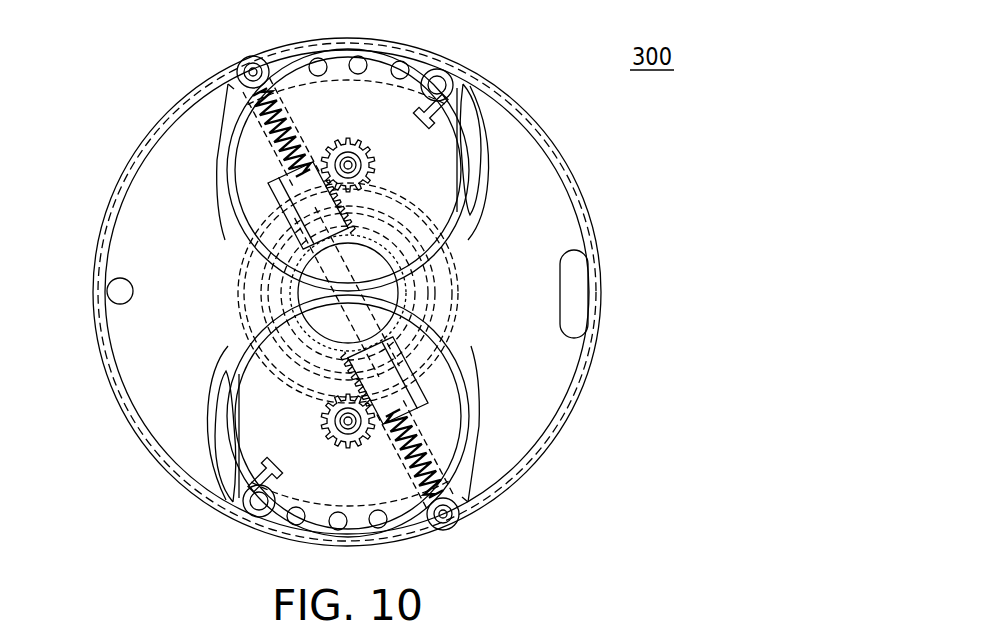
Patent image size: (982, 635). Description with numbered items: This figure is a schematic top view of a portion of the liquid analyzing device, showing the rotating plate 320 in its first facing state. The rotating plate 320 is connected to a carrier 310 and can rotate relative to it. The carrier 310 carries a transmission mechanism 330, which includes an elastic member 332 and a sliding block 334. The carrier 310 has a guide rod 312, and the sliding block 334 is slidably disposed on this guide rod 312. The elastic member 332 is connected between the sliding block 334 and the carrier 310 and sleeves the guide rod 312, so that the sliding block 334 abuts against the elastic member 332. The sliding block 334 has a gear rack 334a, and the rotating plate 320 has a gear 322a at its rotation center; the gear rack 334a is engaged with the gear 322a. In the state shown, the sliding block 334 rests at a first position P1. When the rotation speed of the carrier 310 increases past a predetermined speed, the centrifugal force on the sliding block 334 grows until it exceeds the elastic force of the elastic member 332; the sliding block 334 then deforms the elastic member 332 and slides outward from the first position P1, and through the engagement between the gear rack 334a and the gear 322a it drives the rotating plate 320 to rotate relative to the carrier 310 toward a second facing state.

The carrier 310 is at (558, 357).
The guide rod 312 is at (313, 163).
The rotating plate 320 is at (293, 57).
The gear 322a is at (370, 150).
The transmission mechanism 330 is at (307, 320).
The elastic member 332 is at (267, 127).
The sliding block 334 is at (227, 83).
The gear rack 334a is at (320, 205).
The first position P1 is at (287, 251).